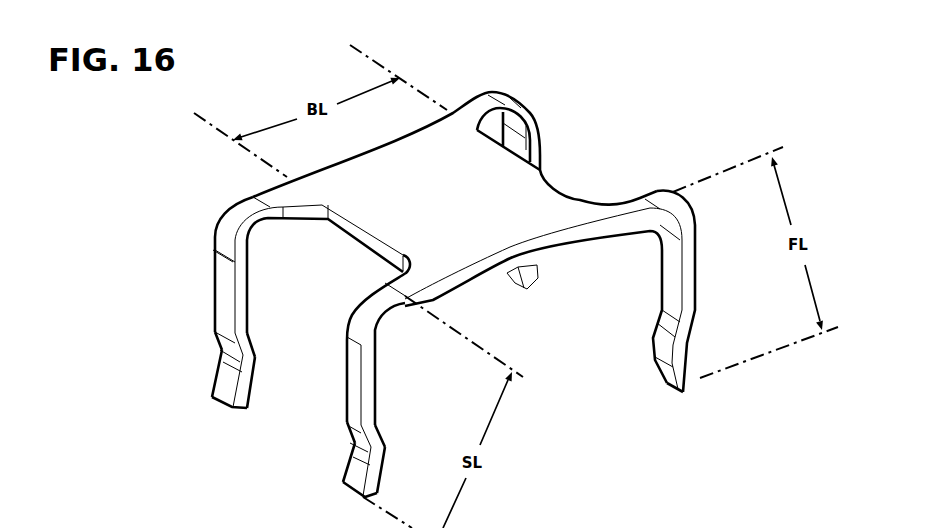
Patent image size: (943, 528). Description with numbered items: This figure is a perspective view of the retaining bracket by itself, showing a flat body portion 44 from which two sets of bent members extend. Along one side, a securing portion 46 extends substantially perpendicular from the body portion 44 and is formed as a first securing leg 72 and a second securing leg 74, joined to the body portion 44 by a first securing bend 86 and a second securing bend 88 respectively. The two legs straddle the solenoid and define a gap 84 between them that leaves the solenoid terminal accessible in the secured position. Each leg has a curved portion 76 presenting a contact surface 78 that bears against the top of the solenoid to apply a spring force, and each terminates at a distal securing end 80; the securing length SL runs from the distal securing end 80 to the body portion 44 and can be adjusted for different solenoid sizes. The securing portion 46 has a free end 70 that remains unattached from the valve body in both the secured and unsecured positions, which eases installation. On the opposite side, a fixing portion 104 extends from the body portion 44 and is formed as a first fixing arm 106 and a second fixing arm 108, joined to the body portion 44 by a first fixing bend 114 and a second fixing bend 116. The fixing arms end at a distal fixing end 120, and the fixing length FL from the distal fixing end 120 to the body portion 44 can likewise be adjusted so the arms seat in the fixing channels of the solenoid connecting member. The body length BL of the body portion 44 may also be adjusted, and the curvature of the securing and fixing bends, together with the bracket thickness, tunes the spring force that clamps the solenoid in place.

The body portion 44 is at (400, 170).
The securing portion 46 is at (188, 283).
The free end 70 is at (200, 405).
The first securing leg 72 is at (215, 303).
The second securing leg 74 is at (375, 384).
The curved portion 76 is at (253, 367).
The contact surface 78 is at (258, 355).
The distal securing end 80 is at (228, 404).
The gap 84 is at (292, 400).
The first securing bend 86 is at (233, 226).
The second securing bend 88 is at (373, 312).
The fixing portion 104 is at (683, 167).
The first fixing arm 106 is at (540, 153).
The second fixing arm 108 is at (692, 295).
The first fixing bend 114 is at (502, 102).
The second fixing bend 116 is at (658, 200).
The distal fixing end 120 is at (518, 278).